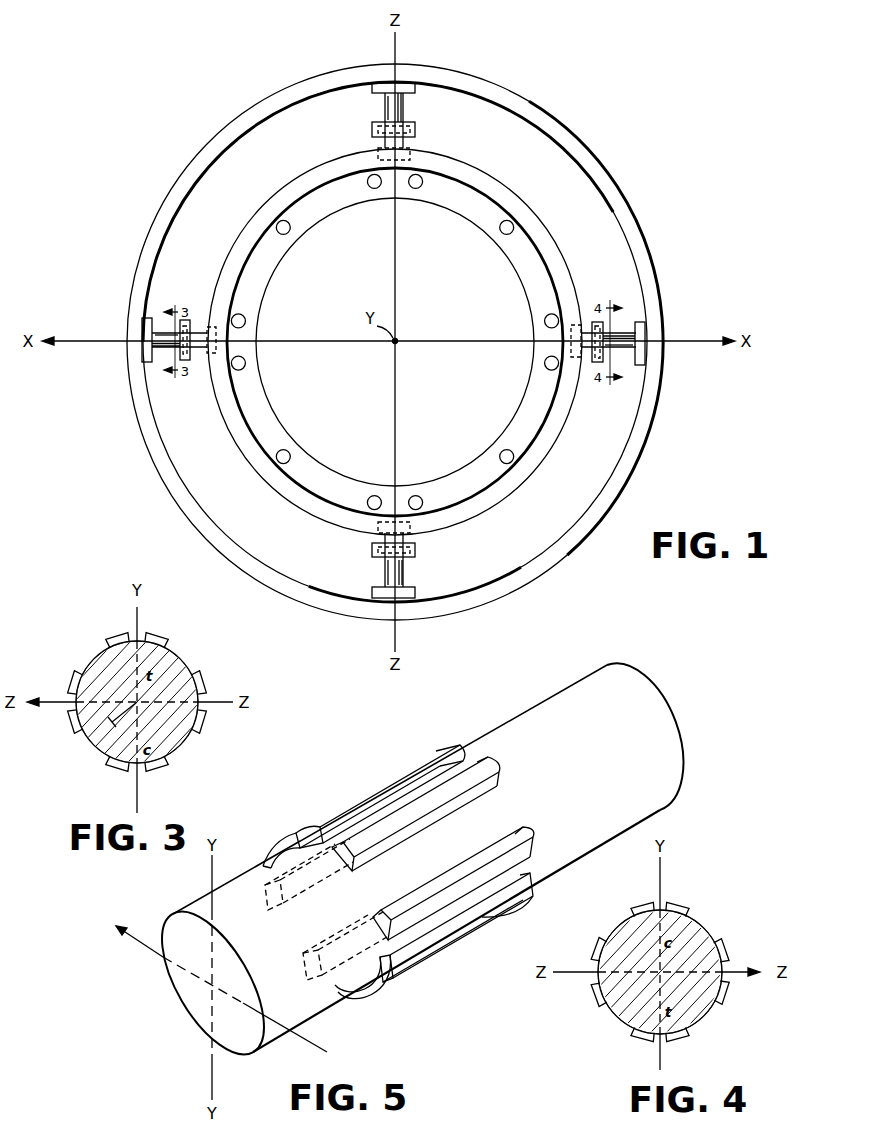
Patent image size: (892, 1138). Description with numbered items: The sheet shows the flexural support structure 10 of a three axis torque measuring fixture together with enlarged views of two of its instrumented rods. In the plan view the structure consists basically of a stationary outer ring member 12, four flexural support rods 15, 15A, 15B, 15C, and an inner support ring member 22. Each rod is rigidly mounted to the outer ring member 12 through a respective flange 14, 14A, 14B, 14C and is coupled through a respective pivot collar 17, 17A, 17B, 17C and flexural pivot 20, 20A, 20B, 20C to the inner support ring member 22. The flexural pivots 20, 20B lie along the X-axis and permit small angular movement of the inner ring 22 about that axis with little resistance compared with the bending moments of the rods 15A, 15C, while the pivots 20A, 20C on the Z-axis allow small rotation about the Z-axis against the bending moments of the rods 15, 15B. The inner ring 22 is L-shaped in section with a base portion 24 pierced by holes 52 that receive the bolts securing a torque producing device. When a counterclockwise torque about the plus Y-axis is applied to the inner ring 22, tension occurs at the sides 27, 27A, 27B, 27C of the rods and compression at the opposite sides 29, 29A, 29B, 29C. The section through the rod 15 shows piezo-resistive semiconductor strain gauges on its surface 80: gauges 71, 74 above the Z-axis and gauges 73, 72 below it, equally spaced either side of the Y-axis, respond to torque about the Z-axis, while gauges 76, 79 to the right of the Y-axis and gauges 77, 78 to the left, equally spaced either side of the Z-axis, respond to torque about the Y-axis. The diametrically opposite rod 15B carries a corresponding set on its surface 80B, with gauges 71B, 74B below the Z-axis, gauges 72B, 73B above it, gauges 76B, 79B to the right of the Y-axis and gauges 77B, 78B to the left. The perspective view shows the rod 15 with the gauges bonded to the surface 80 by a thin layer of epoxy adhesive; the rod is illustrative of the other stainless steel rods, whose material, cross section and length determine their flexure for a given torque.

In FIG. 1, the flexural support structure 10 is at (183, 157).
In FIG. 1, the stationary outer ring member 12 is at (250, 112).
In FIG. 1, the flange 14 is at (146, 352).
In FIG. 1, the flange 14A is at (418, 86).
In FIG. 1, the flange 14B is at (645, 335).
In FIG. 1, the flange 14C is at (412, 594).
In FIG. 1, the flexural support rod 15 is at (146, 333).
In FIG. 3, the flexural support rod 15 is at (92, 654).
In FIG. 5, the flexural support rod 15 is at (657, 709).
In FIG. 1, the flexural support rod 15A is at (387, 114).
In FIG. 1, the flexural support rod 15B is at (626, 332).
In FIG. 4, the flexural support rod 15B is at (612, 930).
In FIG. 1, the flexural support rod 15C is at (406, 580).
In FIG. 1, the pivot collar 17 is at (190, 320).
In FIG. 1, the pivot collar 17A is at (416, 130).
In FIG. 1, the pivot collar 17B is at (575, 322).
In FIG. 1, the pivot collar 17C is at (416, 550).
In FIG. 1, the flexural pivot 20 is at (211, 358).
In FIG. 1, the flexural pivot 20A is at (380, 153).
In FIG. 1, the flexural pivot 20B is at (580, 360).
In FIG. 1, the flexural pivot 20C is at (380, 532).
In FIG. 1, the inner support ring member 22 is at (517, 192).
In FIG. 1, the base portion 24 is at (266, 283).
In FIG. 1, the side 27 is at (159, 326).
In FIG. 1, the side 27A is at (404, 120).
In FIG. 1, the side 27B is at (627, 348).
In FIG. 1, the side 27C is at (374, 570).
In FIG. 1, the opposite side 29 is at (165, 348).
In FIG. 1, the opposite side 29A is at (370, 110).
In FIG. 1, the opposite side 29B is at (621, 324).
In FIG. 1, the opposite side 29C is at (412, 571).
In FIG. 1, the holes 52 is at (374, 188).
In FIG. 3, the strain gauge 71 is at (114, 632).
In FIG. 5, the strain gauge 71 is at (363, 792).
In FIG. 3, the strain gauge 72 is at (158, 772).
In FIG. 5, the strain gauge 72 is at (351, 999).
In FIG. 3, the strain gauge 73 is at (117, 770).
In FIG. 5, the strain gauge 73 is at (303, 984).
In FIG. 3, the strain gauge 74 is at (162, 632).
In FIG. 5, the strain gauge 74 is at (477, 777).
In FIG. 3, the strain gauge 76 is at (207, 682).
In FIG. 5, the strain gauge 76 is at (524, 850).
In FIG. 3, the strain gauge 77 is at (70, 680).
In FIG. 5, the strain gauge 77 is at (275, 850).
In FIG. 3, the strain gauge 78 is at (70, 724).
In FIG. 5, the strain gauge 78 is at (300, 912).
In FIG. 3, the strain gauge 79 is at (207, 722).
In FIG. 5, the strain gauge 79 is at (481, 918).
In FIG. 3, the surface 80 is at (193, 651).
In FIG. 5, the surface 80 is at (540, 700).
In FIG. 4, the strain gauge 71B is at (637, 1040).
In FIG. 4, the strain gauge 72B is at (684, 900).
In FIG. 4, the strain gauge 73B is at (638, 902).
In FIG. 4, the strain gauge 74B is at (686, 1040).
In FIG. 4, the strain gauge 76B is at (727, 997).
In FIG. 4, the strain gauge 77B is at (594, 994).
In FIG. 4, the strain gauge 78B is at (594, 948).
In FIG. 4, the strain gauge 79B is at (730, 950).
In FIG. 4, the surface 80B is at (707, 930).